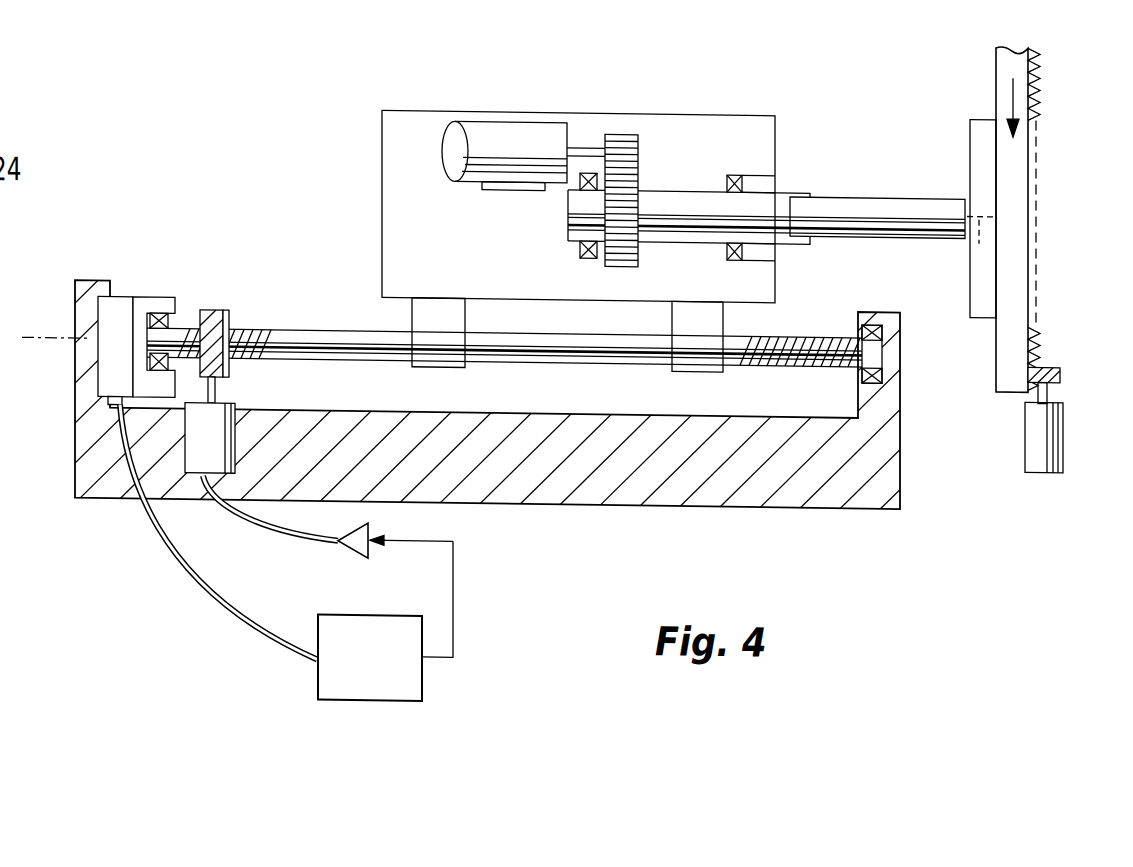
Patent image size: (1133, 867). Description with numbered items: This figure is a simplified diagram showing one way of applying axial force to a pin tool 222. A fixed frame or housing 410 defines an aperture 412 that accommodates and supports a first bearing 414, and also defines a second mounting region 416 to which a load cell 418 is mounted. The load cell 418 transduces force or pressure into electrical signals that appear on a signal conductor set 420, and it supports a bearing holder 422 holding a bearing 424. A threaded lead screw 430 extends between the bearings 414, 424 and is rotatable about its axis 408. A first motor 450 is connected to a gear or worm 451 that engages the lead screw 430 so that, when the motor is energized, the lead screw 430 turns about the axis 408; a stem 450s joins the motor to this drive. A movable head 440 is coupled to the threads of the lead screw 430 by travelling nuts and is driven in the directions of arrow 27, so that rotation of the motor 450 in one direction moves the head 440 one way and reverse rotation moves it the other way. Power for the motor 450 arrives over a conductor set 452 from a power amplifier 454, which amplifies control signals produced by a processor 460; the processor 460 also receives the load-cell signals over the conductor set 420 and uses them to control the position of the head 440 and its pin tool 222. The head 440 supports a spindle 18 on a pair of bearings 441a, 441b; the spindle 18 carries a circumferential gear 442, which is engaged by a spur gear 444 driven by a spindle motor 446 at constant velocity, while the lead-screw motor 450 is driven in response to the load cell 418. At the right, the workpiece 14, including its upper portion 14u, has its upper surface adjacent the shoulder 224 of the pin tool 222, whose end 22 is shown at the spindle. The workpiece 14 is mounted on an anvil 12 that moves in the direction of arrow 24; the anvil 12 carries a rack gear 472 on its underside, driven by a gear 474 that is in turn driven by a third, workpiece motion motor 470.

The anvil 12 is at (996, 372).
The workpiece 14 is at (987, 113).
The upper bracket portion 14u is at (970, 144).
The spindle 18 is at (800, 191).
The shaft end 22 is at (978, 234).
The direction of travel 24 is at (1013, 95).
The arrow 27 is at (340, 188).
The pin tool 222 is at (848, 179).
The shoulder 224 is at (971, 194).
The axis 408 is at (32, 347).
The fixed frame or housing 410 is at (706, 509).
The aperture 412 is at (855, 327).
The first bearing 414 is at (856, 370).
The second mounting region 416 is at (121, 290).
The load cell 418 is at (133, 303).
The signal conductor set 420 is at (186, 610).
The bearing holder 422 is at (172, 303).
The bearing 424 is at (205, 318).
The lead screw 430 is at (562, 362).
The head 440 is at (690, 111).
The bearing 441a is at (585, 261).
The bearing 441b is at (727, 259).
The circumferential gear 442 is at (640, 190).
The spur gear 444 is at (640, 152).
The spindle motor 446 is at (451, 186).
The first motor 450 is at (197, 484).
The sensor stem 450s is at (215, 395).
The gear or worm 451 is at (229, 327).
The conductor set 452 is at (290, 541).
The power amplifier 454 is at (370, 557).
The processor 460 is at (422, 674).
The workpiece motion motor 470 is at (1025, 439).
The rack gear 472 is at (1038, 334).
The gear 474 is at (1062, 369).